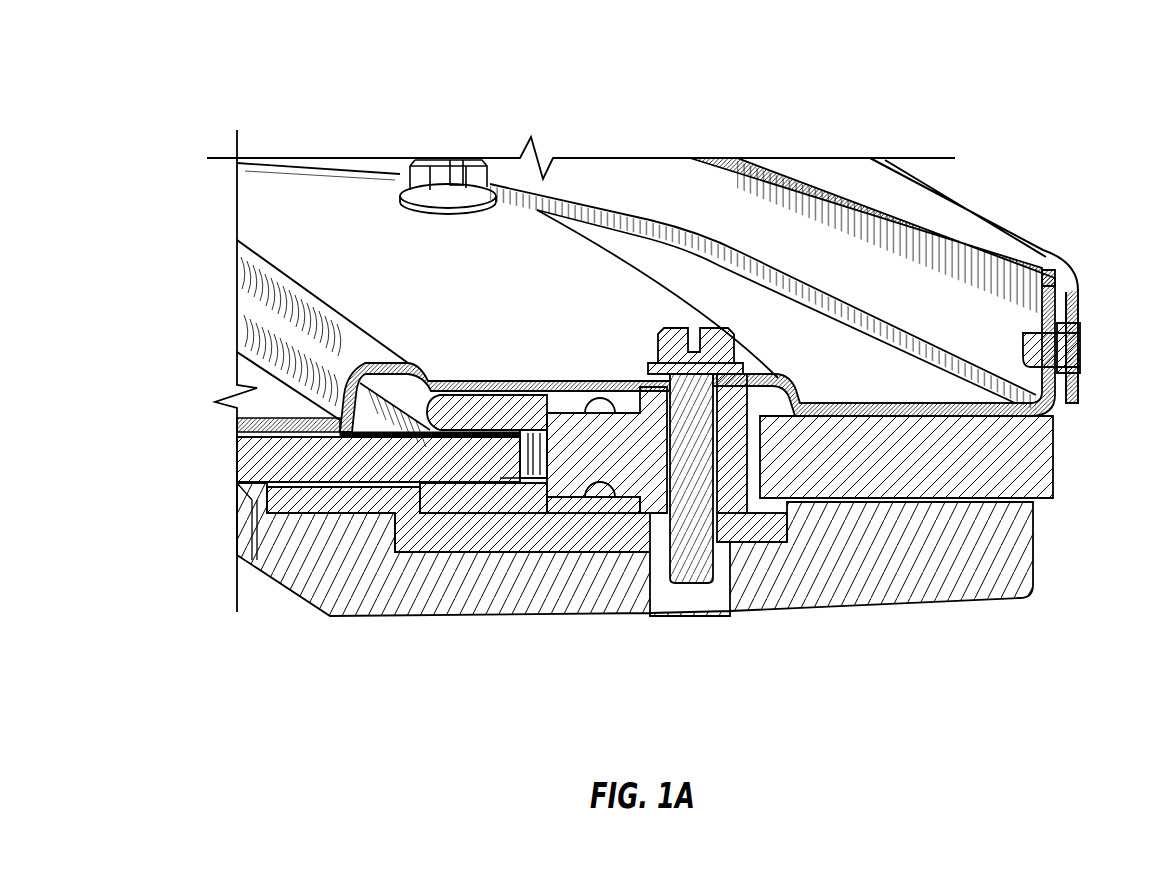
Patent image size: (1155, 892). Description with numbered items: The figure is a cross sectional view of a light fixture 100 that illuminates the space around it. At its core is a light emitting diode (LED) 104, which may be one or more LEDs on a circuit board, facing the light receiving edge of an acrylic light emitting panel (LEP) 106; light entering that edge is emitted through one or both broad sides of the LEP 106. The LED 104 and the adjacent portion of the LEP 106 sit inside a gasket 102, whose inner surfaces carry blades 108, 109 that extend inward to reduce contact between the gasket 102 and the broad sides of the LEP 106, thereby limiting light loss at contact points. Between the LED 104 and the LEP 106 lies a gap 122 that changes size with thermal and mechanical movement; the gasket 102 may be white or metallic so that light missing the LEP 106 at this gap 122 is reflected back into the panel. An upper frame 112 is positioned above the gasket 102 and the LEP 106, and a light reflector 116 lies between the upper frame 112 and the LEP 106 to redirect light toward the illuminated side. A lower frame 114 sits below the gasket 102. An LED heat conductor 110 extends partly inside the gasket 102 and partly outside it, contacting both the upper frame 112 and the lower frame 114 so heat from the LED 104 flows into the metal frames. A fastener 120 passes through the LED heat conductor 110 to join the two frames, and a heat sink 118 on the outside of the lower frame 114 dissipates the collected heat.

The light fixture 100 is at (984, 104).
The gasket 102 is at (563, 397).
The light emitting diode (LED) 104 is at (528, 430).
The light emitting panel (LEP) 106 is at (308, 478).
The blade 108 is at (490, 498).
The blade 109 is at (489, 418).
The LED heat conductor 110 is at (662, 465).
The upper frame 112 is at (850, 361).
The lower frame 114 is at (969, 465).
The light reflector 116 is at (293, 432).
The heat sink 118 is at (562, 600).
The fastener 120 is at (718, 329).
The gap 122 is at (528, 493).